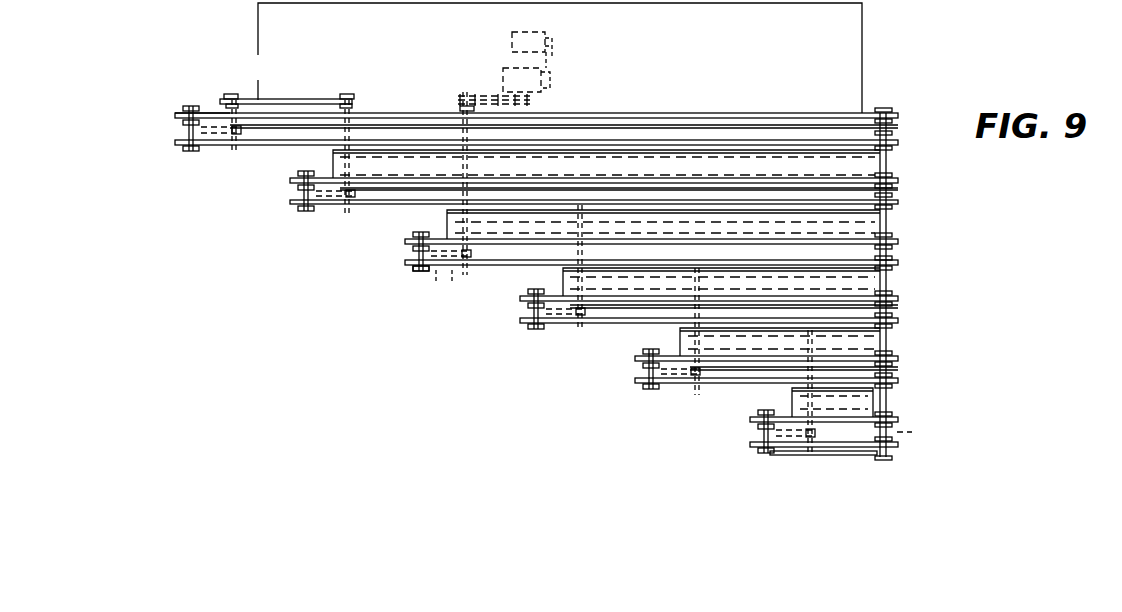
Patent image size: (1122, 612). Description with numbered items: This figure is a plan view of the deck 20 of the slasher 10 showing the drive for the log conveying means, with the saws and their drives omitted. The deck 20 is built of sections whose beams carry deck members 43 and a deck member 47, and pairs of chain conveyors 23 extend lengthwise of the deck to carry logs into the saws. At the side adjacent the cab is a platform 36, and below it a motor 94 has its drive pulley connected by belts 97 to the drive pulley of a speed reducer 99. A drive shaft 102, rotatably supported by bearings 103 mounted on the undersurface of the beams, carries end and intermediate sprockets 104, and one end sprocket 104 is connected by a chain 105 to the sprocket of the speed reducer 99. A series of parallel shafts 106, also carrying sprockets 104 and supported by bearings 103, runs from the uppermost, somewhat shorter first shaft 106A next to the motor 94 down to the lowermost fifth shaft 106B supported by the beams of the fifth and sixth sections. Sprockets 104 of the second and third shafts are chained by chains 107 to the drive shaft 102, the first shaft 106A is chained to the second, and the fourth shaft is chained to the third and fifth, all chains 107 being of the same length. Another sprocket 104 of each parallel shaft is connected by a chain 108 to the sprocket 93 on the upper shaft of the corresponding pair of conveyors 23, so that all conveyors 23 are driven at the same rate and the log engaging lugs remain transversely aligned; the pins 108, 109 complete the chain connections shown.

The conveyor apparatus 10 is at (240, 152).
The deck 20 is at (783, 165).
The conveyors 23 is at (176, 122).
The platform 36 is at (848, 48).
The deck member 43 is at (862, 253).
The deck member 47 is at (867, 402).
The sprocket 93 is at (406, 254).
The motor 94 is at (550, 30).
The belts 97 is at (553, 58).
The speed reducer 99 is at (508, 65).
The drive shaft 102 is at (432, 107).
The bearings 103 is at (458, 104).
The sprockets 104 is at (326, 222).
The chain 105 is at (530, 99).
The parallel shafts 106 is at (282, 158).
The first shaft 106A is at (218, 110).
The fifth shaft 106B is at (737, 392).
The chains 107 is at (278, 99).
The chain 108 is at (428, 275).
The pin 109 is at (478, 275).